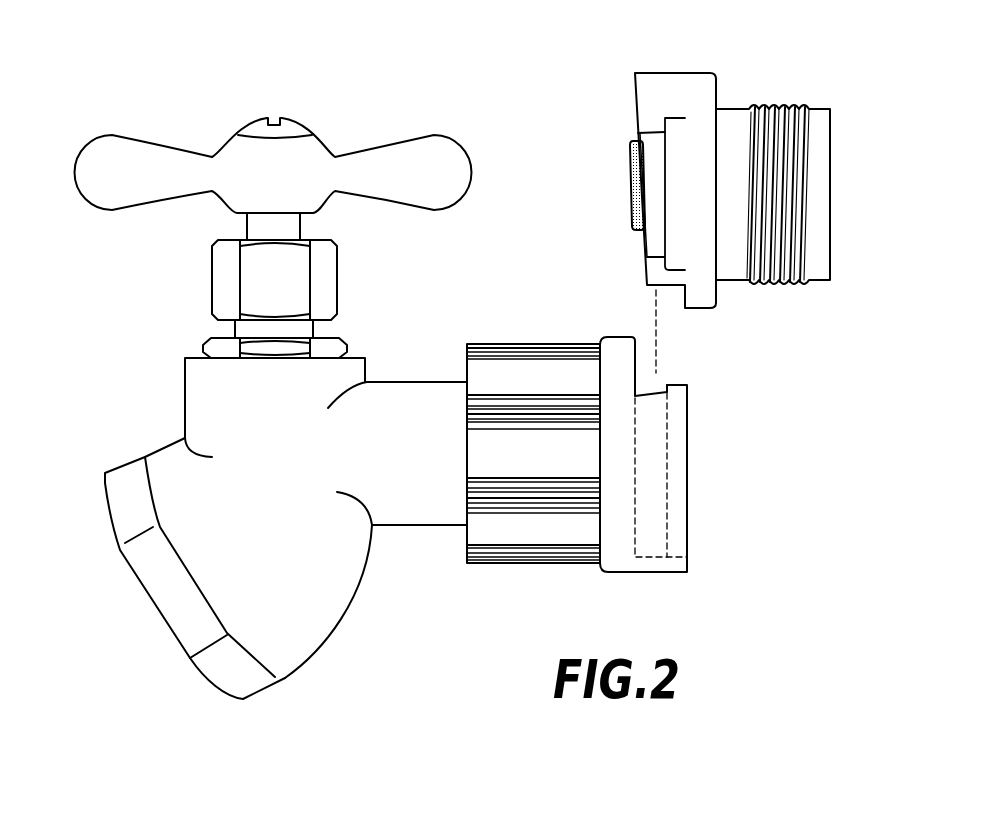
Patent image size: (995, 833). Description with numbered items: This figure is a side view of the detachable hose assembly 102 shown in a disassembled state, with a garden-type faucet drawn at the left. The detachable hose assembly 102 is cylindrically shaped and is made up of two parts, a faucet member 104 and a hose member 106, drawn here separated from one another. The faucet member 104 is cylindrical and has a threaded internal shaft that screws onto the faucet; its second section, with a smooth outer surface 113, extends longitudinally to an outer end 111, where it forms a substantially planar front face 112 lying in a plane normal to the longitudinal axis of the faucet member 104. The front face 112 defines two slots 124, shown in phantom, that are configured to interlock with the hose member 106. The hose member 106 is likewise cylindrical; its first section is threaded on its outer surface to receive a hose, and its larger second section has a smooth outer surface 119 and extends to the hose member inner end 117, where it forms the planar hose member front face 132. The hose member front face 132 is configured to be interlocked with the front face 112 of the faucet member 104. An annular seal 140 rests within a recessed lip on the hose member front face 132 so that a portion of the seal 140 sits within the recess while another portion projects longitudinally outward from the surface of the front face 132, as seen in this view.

The detachable hose assembly 102 is at (540, 70).
The faucet member 104 is at (487, 590).
The hose member 106 is at (761, 61).
The outer end 111 is at (710, 418).
The front face 112 is at (637, 348).
The smooth outer surface 113 is at (605, 382).
The hose member inner end 117 is at (594, 160).
The smooth outer surface 119 is at (662, 87).
The slots 124 is at (653, 527).
The hose member front face 132 is at (635, 93).
The annular seal 140 is at (633, 206).